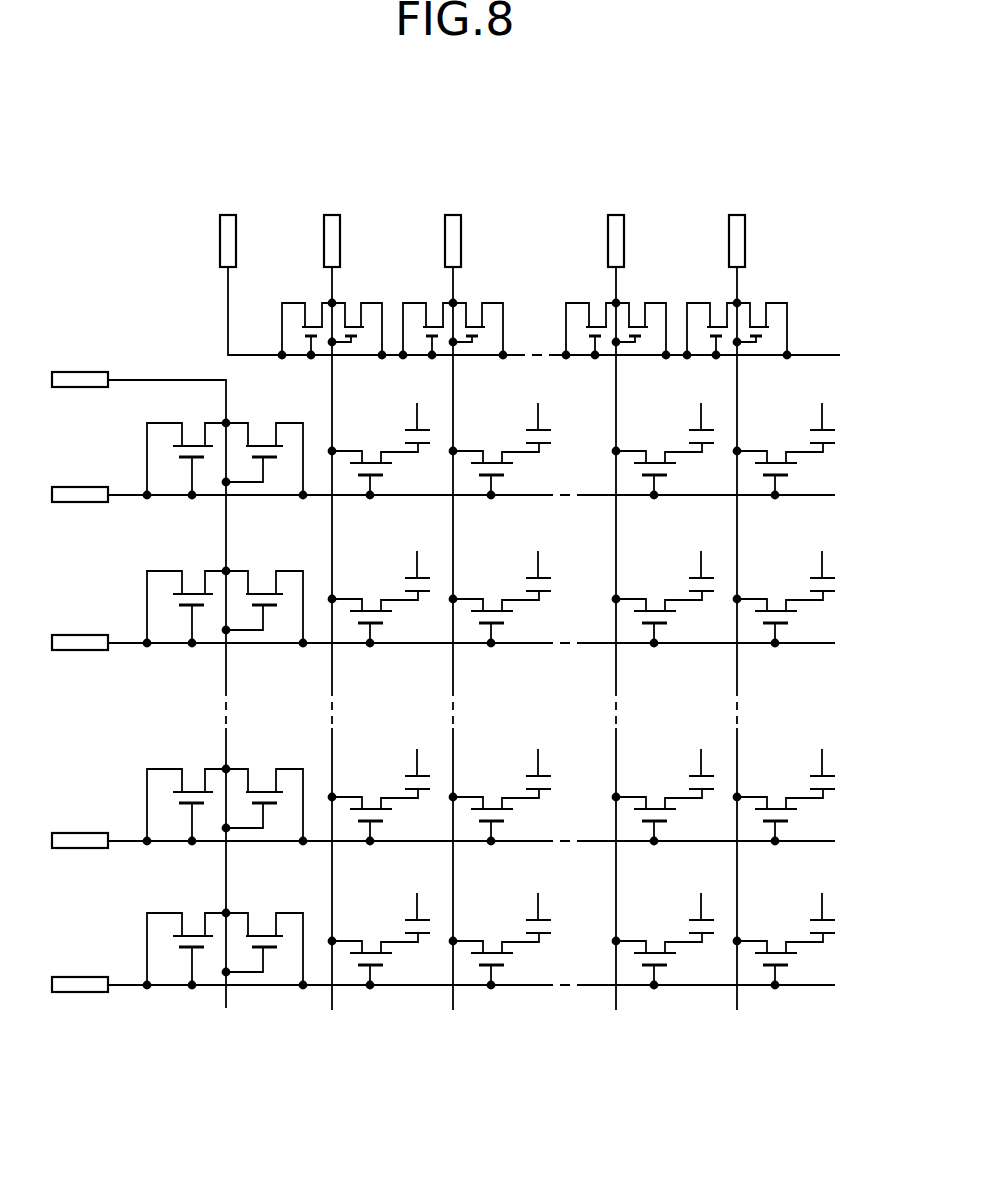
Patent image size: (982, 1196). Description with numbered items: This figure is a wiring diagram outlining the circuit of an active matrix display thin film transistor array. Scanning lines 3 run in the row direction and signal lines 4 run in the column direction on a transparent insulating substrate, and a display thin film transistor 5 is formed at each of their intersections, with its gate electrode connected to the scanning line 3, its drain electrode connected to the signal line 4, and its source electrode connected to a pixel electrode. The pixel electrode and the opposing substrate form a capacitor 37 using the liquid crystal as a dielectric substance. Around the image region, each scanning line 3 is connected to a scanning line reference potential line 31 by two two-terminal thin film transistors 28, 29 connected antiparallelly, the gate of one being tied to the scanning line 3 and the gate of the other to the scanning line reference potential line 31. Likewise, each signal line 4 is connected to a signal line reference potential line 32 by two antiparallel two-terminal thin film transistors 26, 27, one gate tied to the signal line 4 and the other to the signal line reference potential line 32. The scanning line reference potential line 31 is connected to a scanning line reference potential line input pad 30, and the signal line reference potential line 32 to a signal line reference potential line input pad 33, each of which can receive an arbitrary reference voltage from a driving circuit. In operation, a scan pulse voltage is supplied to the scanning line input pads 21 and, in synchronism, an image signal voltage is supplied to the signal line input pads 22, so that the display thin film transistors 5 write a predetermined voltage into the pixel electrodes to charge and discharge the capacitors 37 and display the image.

The scanning line 3 is at (130, 497).
The signal line 4 is at (332, 283).
The display thin film transistor 5 is at (800, 471).
The scanning line input pad 21 is at (82, 490).
The signal line input pad 22 is at (325, 236).
The two-terminal thin film transistor 26 is at (373, 298).
The two-terminal thin film transistor 27 is at (293, 298).
The two-terminal thin film transistor 28 is at (257, 417).
The two-terminal thin film transistor 29 is at (147, 447).
The scanning line reference potential line input pad 30 is at (72, 372).
The scanning line reference potential line 31 is at (167, 379).
The signal line reference potential line 32 is at (228, 290).
The signal line reference potential line input pad 33 is at (221, 238).
The capacitor 37 is at (842, 435).